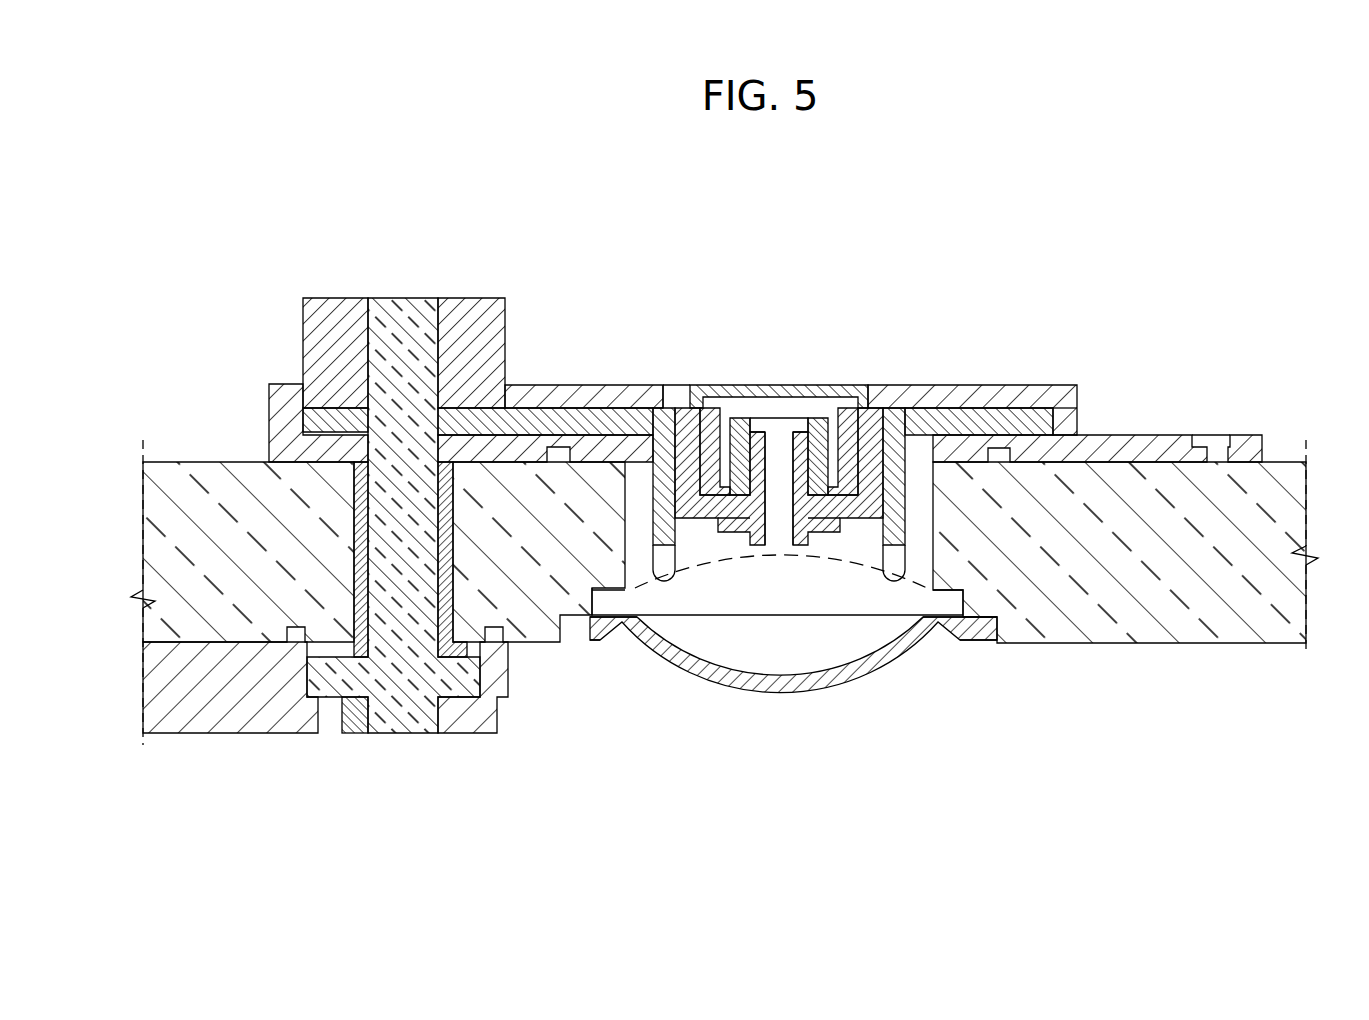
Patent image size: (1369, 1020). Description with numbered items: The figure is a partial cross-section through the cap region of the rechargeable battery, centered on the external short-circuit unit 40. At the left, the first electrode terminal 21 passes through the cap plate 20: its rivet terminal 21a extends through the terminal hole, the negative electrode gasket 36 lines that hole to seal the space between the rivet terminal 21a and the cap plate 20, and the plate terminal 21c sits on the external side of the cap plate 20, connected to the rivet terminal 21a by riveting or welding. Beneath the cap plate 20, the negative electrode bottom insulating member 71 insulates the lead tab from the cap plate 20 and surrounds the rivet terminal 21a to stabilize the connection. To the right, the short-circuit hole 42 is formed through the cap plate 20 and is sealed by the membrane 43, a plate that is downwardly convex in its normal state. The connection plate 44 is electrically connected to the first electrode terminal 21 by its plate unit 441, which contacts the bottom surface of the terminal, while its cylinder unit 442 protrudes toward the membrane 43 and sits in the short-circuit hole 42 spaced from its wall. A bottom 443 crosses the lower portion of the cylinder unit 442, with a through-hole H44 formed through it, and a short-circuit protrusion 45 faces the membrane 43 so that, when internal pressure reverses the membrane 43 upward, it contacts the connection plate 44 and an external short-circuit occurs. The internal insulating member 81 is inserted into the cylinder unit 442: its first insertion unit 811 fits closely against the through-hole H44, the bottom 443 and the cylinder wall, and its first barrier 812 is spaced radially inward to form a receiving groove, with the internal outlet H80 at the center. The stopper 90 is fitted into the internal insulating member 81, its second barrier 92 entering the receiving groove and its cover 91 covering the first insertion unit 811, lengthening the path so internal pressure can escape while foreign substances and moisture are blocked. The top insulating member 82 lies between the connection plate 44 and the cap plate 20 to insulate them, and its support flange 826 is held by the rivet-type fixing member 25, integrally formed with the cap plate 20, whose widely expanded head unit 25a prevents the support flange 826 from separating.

The cap plate 20 is at (1100, 618).
The negative electrode bottom insulating member 71 is at (200, 712).
The negative electrode gasket 36 is at (364, 528).
The first electrode terminal 21 is at (461, 465).
The rivet terminal 21a is at (405, 313).
The plate terminal 21c is at (473, 313).
The external short-circuit unit 40 is at (653, 498).
The connection plate 44 is at (653, 521).
The plate unit 441 is at (912, 428).
The cylinder unit 442 is at (900, 455).
The bottom 443 is at (845, 548).
The through-hole H44 is at (797, 555).
The internal insulating member 81 is at (745, 491).
The first insertion unit 811 is at (630, 410).
The first barrier 812 is at (733, 418).
The internal outlet H80 is at (776, 528).
The stopper 90 is at (794, 385).
The cover 91 is at (794, 410).
The second barrier 92 is at (838, 412).
The short-circuit protrusion 45 is at (893, 580).
The membrane 43 is at (660, 650).
The short-circuit hole 42 is at (942, 630).
The top insulating member 82 is at (851, 395).
The support flange 826 is at (1173, 447).
The fixing member 25 is at (1113, 397).
The head unit 25a is at (1238, 433).